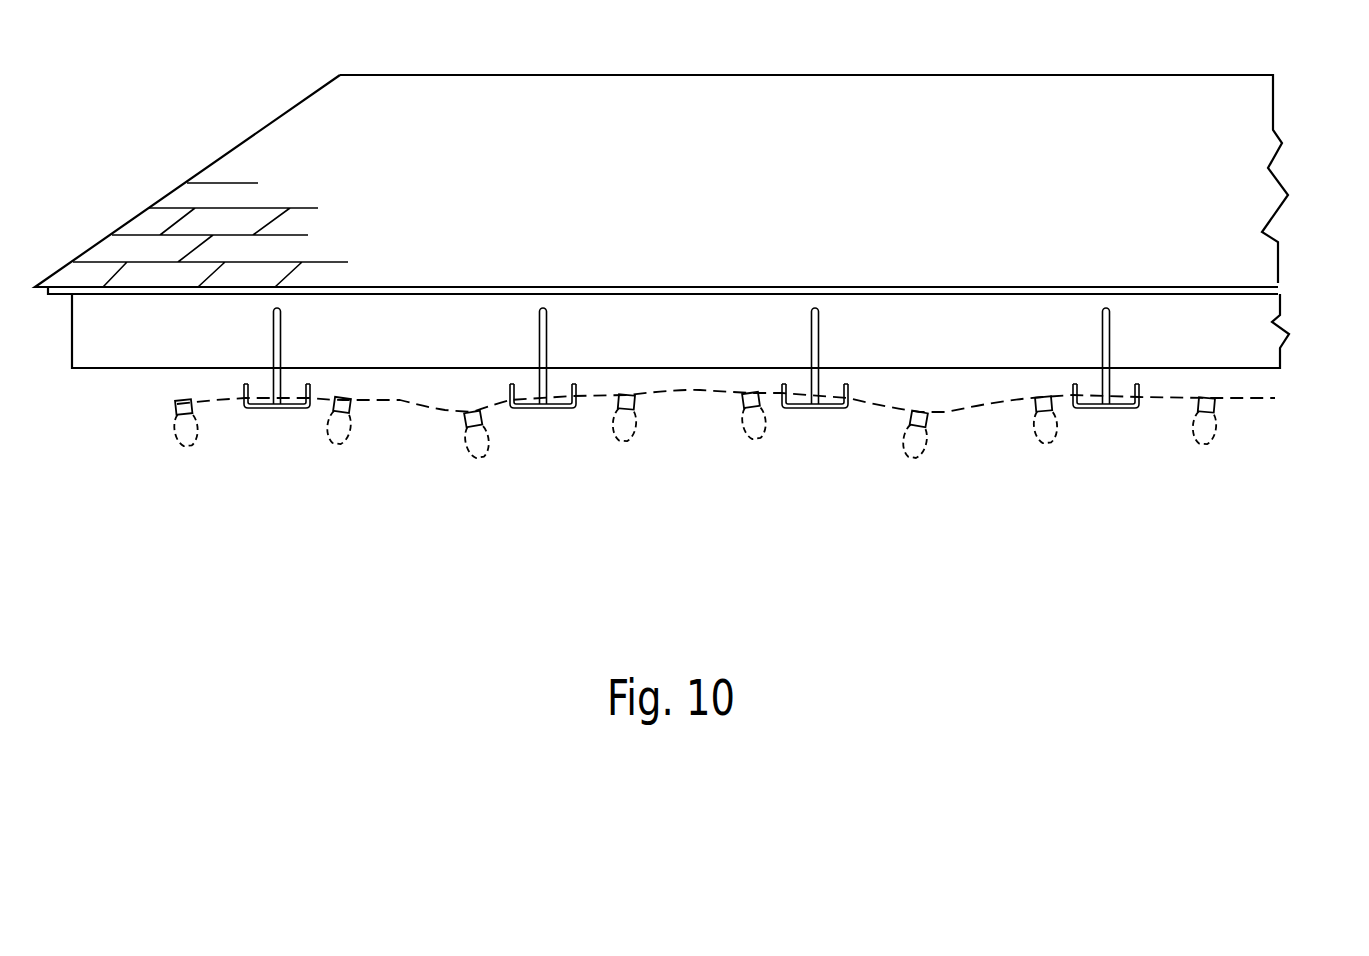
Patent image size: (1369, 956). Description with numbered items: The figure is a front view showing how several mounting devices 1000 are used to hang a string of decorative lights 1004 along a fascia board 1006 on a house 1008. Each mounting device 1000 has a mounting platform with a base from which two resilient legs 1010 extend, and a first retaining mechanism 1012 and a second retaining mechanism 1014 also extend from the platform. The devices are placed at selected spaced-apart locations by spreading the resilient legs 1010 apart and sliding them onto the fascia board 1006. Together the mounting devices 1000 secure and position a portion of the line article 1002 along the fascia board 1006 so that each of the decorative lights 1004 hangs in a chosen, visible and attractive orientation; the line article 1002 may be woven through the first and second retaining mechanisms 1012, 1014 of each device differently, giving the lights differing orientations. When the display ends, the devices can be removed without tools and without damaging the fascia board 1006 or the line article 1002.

The mounting device 1000 is at (704, 469).
The line article 1002 is at (977, 434).
The decorative lights 1004 is at (912, 447).
The fascia board 1006 is at (1283, 353).
The house 1008 is at (948, 172).
The resilient legs 1010 is at (273, 333).
The first retaining mechanism 1012 is at (528, 408).
The second retaining mechanism 1014 is at (570, 407).